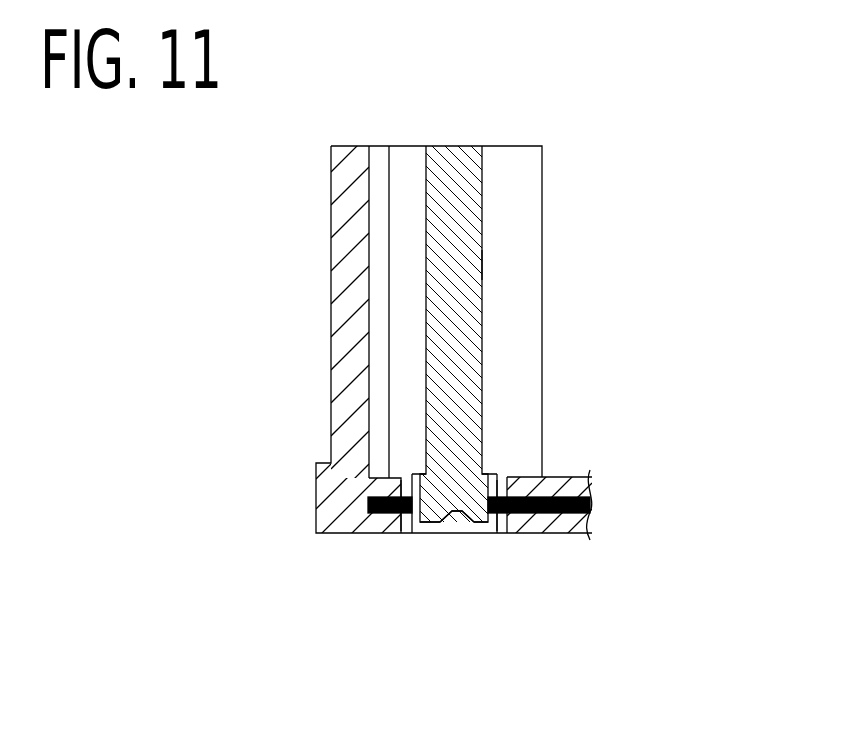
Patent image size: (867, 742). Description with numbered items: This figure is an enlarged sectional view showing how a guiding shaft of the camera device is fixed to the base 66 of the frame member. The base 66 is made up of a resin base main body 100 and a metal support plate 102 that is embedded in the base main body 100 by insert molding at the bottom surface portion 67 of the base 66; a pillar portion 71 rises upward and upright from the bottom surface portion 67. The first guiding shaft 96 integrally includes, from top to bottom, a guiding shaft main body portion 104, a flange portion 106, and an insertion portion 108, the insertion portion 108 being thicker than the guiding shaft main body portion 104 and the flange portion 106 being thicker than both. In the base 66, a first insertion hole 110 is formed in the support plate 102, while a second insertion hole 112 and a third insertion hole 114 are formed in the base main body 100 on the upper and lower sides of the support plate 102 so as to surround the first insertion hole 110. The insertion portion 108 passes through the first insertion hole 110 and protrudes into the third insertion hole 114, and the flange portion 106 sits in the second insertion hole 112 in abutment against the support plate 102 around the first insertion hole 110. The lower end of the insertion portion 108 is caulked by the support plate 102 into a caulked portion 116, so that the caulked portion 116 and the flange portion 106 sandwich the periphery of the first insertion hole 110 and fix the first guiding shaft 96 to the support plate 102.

The base 66 is at (331, 337).
The bottom surface portion 67 is at (555, 533).
The pillar portion 71 is at (347, 208).
The first guiding shaft 96 is at (483, 267).
The base main body 100 is at (345, 410).
The support plate 102 is at (580, 497).
The guiding shaft main body portion 104 is at (462, 342).
The flange portion 106 is at (412, 483).
The insertion portion 108 is at (440, 523).
The first insertion hole 110 is at (478, 498).
The second insertion hole 112 is at (416, 486).
The third insertion hole 114 is at (497, 533).
The caulked portion 116 is at (450, 521).